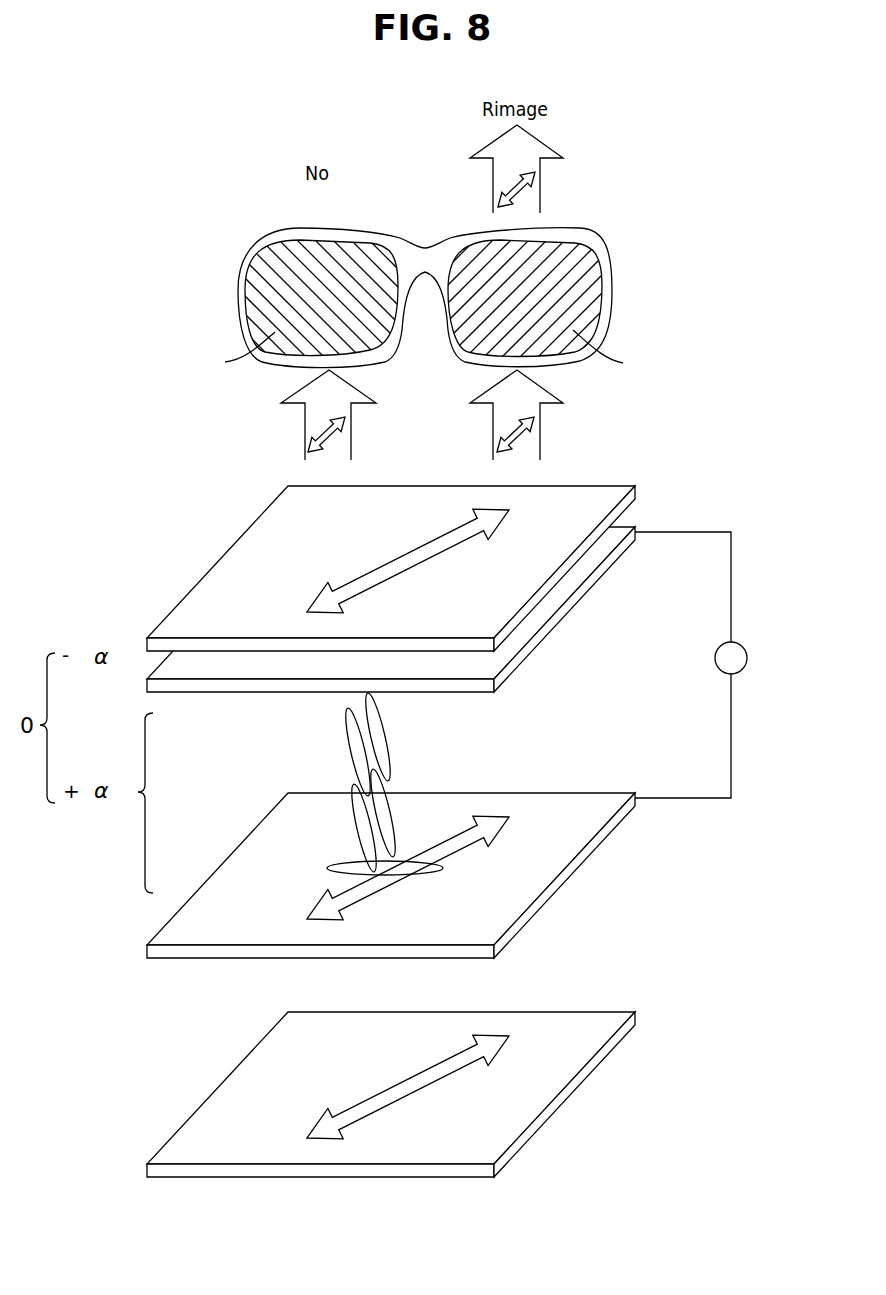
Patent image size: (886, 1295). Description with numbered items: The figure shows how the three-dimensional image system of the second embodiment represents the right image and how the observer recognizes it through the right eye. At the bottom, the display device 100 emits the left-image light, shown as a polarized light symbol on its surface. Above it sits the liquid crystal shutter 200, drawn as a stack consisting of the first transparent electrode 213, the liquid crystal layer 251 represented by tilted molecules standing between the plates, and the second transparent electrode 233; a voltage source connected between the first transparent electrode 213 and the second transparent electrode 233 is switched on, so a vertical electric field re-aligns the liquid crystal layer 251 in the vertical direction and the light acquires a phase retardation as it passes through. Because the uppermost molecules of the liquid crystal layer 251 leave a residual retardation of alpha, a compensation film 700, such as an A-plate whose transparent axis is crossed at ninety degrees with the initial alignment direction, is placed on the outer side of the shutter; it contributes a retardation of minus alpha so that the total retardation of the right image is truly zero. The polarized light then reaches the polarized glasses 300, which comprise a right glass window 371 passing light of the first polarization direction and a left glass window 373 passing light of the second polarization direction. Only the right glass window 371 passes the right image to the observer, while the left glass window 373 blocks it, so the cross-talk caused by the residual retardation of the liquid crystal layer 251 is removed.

The polarized glasses 300 is at (431, 302).
The left glass window 373 is at (238, 311).
The right glass window 371 is at (603, 305).
The compensation film 700 is at (222, 573).
The second transparent electrode 233 is at (518, 657).
The liquid crystal layer 251 is at (336, 768).
The first transparent electrode 213 is at (518, 923).
The liquid crystal shutter 200 is at (481, 742).
The display device 100 is at (637, 1102).